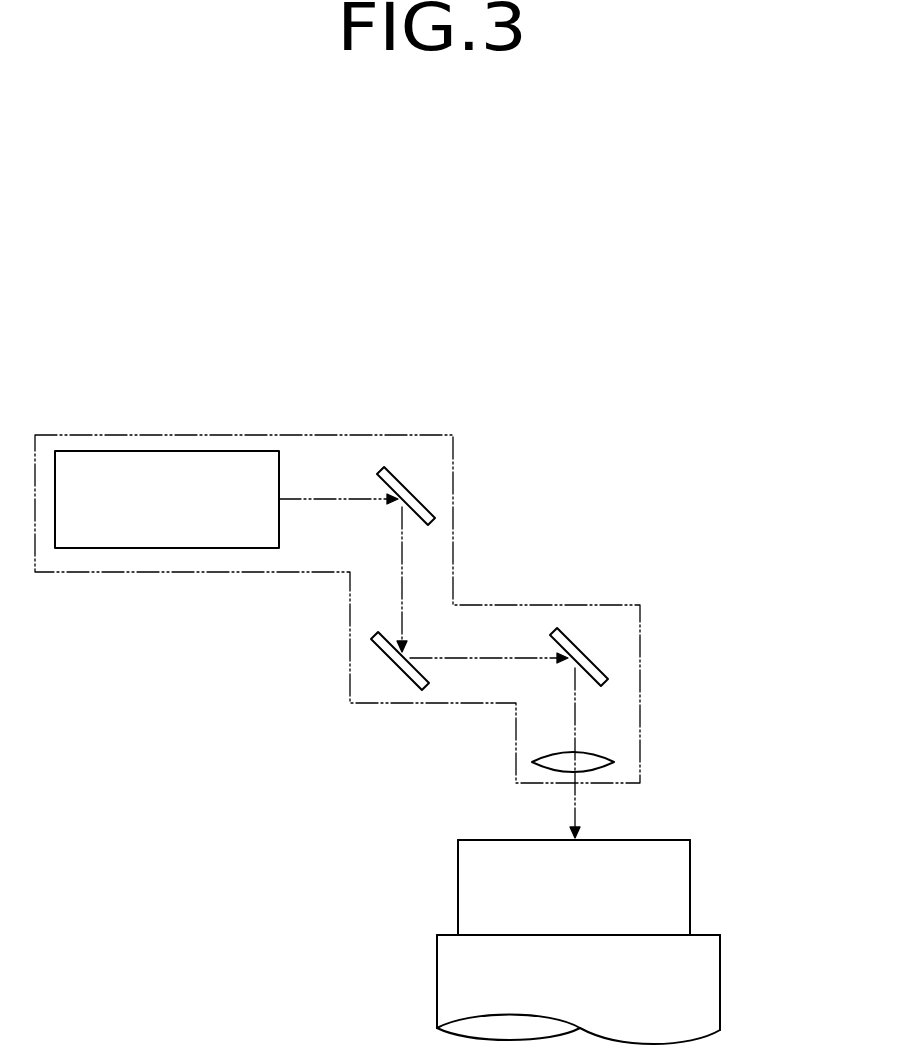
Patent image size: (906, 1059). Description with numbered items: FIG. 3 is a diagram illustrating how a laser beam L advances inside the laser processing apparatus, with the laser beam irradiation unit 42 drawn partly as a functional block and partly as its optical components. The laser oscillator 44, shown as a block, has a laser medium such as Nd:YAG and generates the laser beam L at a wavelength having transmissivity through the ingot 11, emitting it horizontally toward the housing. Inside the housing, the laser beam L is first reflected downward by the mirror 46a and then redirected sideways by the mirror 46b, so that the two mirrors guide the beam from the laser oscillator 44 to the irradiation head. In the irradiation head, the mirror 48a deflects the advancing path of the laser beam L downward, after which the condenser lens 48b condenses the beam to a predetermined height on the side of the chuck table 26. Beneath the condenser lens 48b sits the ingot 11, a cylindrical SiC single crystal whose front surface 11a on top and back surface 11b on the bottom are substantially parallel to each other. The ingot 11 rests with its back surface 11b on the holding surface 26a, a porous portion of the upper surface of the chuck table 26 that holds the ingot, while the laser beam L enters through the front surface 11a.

The laser beam irradiation unit 42 is at (222, 433).
The laser oscillator 44 is at (117, 451).
The laser beam L is at (338, 499).
The mirror 46a is at (396, 477).
The mirror 46b is at (382, 652).
The mirror 48a is at (595, 662).
The condenser lens 48b is at (597, 753).
The ingot 11 is at (675, 885).
The front surface 11a is at (663, 840).
The back surface 11b is at (677, 933).
The chuck table 26 is at (455, 972).
The holding surface 26a is at (483, 933).